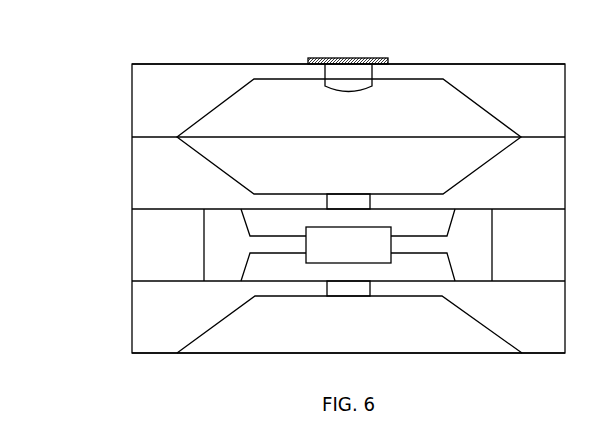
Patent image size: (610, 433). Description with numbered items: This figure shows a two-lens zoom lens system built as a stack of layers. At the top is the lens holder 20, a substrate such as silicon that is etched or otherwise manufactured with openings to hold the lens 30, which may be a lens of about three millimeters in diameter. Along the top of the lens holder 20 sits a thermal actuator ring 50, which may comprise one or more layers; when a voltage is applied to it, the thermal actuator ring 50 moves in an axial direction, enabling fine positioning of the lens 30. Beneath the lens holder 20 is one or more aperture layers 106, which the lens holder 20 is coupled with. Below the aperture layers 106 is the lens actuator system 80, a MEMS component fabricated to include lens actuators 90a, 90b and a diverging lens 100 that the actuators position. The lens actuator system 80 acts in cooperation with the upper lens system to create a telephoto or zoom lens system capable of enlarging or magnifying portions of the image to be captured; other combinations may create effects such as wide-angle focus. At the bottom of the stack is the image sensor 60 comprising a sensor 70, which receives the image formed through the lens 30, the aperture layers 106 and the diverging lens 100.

The lens holder 20 is at (535, 99).
The aperture layer 106 is at (553, 183).
The lens 30 is at (348, 76).
The thermal actuator ring 50 is at (390, 57).
The lens actuator system 80 is at (542, 252).
The diverging lens 100 is at (366, 255).
The lens actuator 90a is at (259, 225).
The lens actuator 90b is at (259, 267).
The image sensor 60 is at (547, 332).
The sensor 70 is at (349, 349).